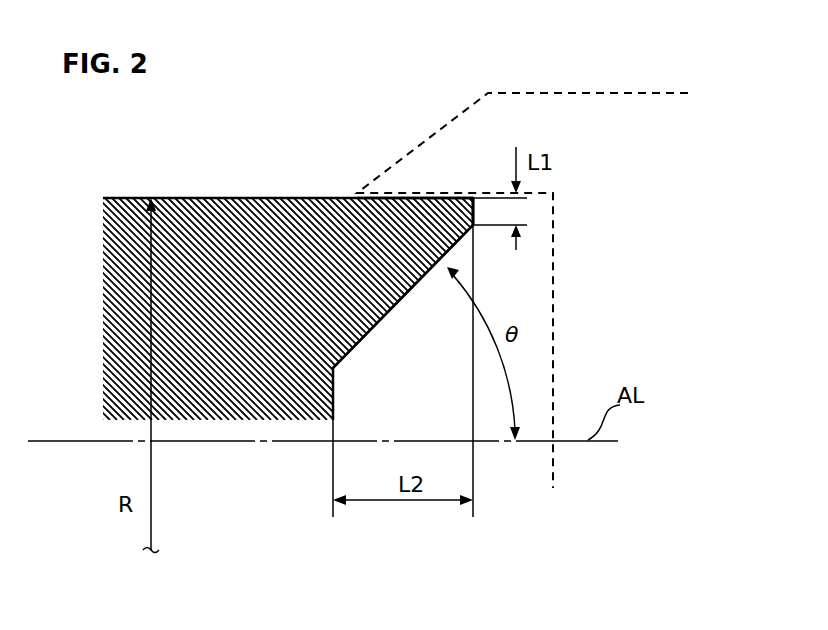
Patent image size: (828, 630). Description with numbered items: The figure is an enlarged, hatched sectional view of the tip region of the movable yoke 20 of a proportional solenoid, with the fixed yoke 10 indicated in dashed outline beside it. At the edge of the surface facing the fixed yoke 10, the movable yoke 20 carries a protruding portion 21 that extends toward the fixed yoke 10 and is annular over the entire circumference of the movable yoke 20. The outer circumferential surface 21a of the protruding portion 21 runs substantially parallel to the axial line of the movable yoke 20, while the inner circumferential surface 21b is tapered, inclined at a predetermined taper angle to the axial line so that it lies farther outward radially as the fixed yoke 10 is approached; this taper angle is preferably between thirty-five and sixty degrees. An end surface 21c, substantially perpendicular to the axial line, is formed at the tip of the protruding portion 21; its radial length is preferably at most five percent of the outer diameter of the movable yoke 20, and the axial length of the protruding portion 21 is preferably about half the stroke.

The fixed yoke 10 is at (602, 88).
The movable yoke 20 is at (179, 192).
The protruding portion 21 is at (386, 222).
The outer circumferential surface 21a is at (423, 206).
The inner circumferential surface 21b is at (407, 288).
The end surface 21c is at (473, 213).